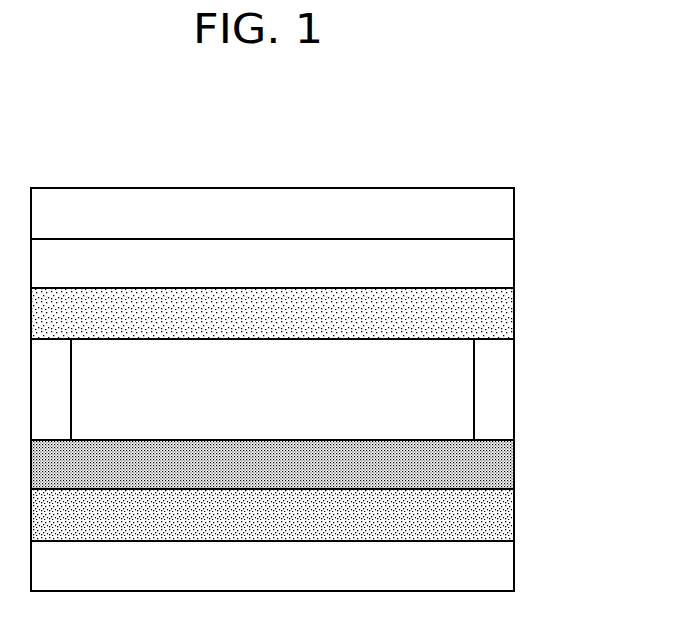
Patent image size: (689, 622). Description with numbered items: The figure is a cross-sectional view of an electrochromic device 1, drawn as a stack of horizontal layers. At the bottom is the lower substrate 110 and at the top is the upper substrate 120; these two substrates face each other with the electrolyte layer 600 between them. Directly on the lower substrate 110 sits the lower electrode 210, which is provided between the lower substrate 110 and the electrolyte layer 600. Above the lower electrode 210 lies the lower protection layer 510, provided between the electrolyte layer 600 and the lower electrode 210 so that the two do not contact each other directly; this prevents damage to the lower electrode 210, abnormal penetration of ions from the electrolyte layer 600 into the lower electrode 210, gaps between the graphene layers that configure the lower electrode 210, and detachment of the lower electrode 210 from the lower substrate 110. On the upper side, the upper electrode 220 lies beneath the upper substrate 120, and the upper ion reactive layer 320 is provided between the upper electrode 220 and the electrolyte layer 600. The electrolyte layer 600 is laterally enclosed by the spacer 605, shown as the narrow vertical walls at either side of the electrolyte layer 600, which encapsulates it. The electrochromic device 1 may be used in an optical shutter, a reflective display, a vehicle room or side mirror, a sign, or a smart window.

The electrochromic device 1 is at (281, 156).
The upper substrate 120 is at (514, 213).
The upper electrode 220 is at (514, 263).
The upper ion reactive layer 320 is at (514, 313).
The spacer 605 is at (514, 373).
The electrolyte layer 600 is at (453, 405).
The lower protection layer 510 is at (514, 465).
The lower electrode 210 is at (514, 515).
The lower substrate 110 is at (514, 565).